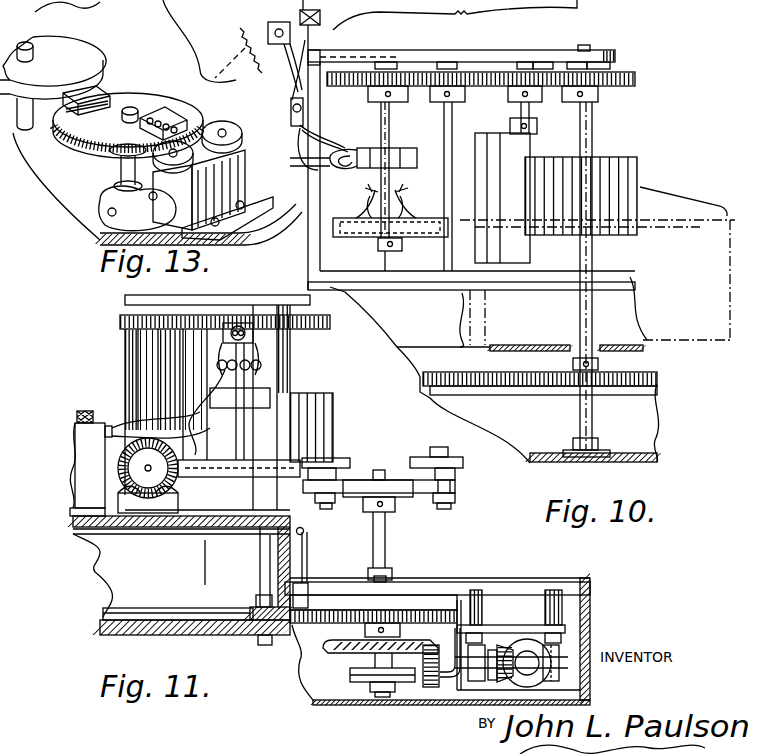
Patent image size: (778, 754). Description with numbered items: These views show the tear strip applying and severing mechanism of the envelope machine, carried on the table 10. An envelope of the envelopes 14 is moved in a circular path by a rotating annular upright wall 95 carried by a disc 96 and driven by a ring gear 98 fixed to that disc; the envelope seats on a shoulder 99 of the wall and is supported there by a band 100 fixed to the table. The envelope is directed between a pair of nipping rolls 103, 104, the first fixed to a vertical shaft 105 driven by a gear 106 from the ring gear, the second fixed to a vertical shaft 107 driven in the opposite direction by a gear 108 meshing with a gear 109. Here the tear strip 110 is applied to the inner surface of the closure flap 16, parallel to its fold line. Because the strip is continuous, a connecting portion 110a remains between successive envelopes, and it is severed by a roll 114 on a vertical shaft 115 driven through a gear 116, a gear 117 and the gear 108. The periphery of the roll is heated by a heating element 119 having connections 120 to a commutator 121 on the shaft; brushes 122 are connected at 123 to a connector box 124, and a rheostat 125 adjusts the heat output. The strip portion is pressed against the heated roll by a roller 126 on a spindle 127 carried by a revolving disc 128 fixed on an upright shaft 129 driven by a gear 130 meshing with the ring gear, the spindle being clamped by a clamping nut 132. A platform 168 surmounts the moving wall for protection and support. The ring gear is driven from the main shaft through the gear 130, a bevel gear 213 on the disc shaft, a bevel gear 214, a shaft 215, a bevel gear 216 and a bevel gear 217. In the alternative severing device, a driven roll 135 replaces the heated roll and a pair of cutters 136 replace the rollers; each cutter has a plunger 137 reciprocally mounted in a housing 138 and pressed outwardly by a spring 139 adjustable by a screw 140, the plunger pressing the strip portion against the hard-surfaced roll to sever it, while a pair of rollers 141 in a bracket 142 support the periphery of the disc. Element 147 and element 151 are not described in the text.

In FIG. 13, the table 10 is at (234, 14).
In FIG. 10, the table 10 is at (625, 345).
In FIG. 11, the table 10 is at (443, 608).
In FIG. 10, the envelopes 14 is at (500, 332).
In FIG. 10, the closure flap 16 is at (682, 201).
In FIG. 11, the annular upright wall 95 is at (280, 553).
In FIG. 11, the disc 96 is at (122, 638).
In FIG. 11, the ring gear 98 is at (252, 612).
In FIG. 11, the shoulder 99 is at (296, 580).
In FIG. 11, the band 100 is at (304, 532).
In FIG. 10, the nipping roll 103 is at (637, 166).
In FIG. 11, the nipping roll 103 is at (336, 420).
In FIG. 10, the nipping roll 104 is at (490, 140).
In FIG. 10, the shaft 105 is at (578, 318).
In FIG. 11, the shaft 105 is at (294, 398).
In FIG. 10, the gear 106 is at (620, 372).
In FIG. 10, the shaft 107 is at (548, 62).
In FIG. 10, the gear 108 is at (490, 70).
In FIG. 10, the gear 109 is at (622, 67).
In FIG. 10, the tear strip 110 is at (700, 226).
In FIG. 10, the connecting portion 110a is at (482, 220).
In FIG. 10, the roll 114 is at (366, 240).
In FIG. 11, the roll 114 is at (192, 530).
In FIG. 10, the shaft 115 is at (393, 116).
In FIG. 11, the shaft 115 is at (336, 438).
In FIG. 10, the gear 116 is at (352, 72).
In FIG. 10, the gear 117 is at (440, 72).
In FIG. 10, the heating element 119 is at (340, 212).
In FIG. 10, the connections 120 is at (368, 189).
In FIG. 10, the commutator 121 is at (396, 150).
In FIG. 10, the brushes 122 is at (365, 148).
In FIG. 10, the connections 123 is at (318, 140).
In FIG. 13, the connector box 124 is at (290, 110).
In FIG. 11, the rheostat 125 is at (106, 423).
In FIG. 11, the roller 126 is at (425, 462).
In FIG. 11, the spindle 127 is at (326, 506).
In FIG. 11, the disc 128 is at (456, 485).
In FIG. 11, the shaft 129 is at (389, 538).
In FIG. 11, the gear 130 is at (458, 590).
In FIG. 11, the clamping nut 132 is at (456, 497).
In FIG. 13, the driven roll 135 is at (84, 50).
In FIG. 13, the cutters 136 is at (98, 85).
In FIG. 13, the plunger 137 is at (70, 140).
In FIG. 13, the housing 138 is at (175, 112).
In FIG. 13, the spring 139 is at (140, 130).
In FIG. 13, the screw 140 is at (112, 100).
In FIG. 13, the rollers 141 is at (242, 135).
In FIG. 13, the bracket 142 is at (248, 170).
In FIG. 13, the gear 147 is at (258, 57).
In FIG. 10, the frame member 151 is at (312, 58).
In FIG. 11, the platform 168 is at (106, 530).
In FIG. 11, the bevel gear 213 is at (338, 648).
In FIG. 11, the bevel gear 214 is at (428, 690).
In FIG. 11, the shaft 215 is at (466, 680).
In FIG. 11, the bevel gear 216 is at (508, 652).
In FIG. 11, the bevel gear 217 is at (560, 652).